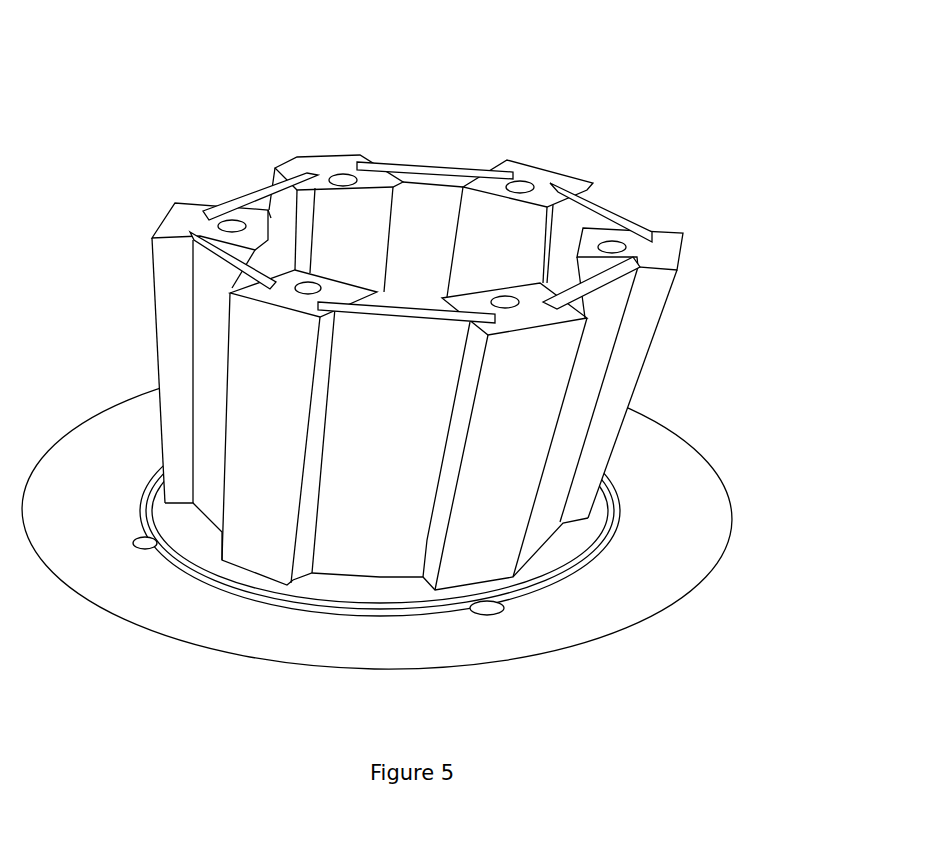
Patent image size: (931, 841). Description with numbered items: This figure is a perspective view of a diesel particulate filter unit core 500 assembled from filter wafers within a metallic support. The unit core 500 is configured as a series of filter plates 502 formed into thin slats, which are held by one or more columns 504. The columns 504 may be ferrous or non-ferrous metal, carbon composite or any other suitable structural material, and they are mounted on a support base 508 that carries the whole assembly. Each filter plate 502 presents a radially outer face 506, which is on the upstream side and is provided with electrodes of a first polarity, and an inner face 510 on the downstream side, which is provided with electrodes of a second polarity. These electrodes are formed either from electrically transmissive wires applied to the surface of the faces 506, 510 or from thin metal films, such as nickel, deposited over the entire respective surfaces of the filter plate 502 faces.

The unit core 500 is at (640, 119).
The filter plate 502 is at (255, 190).
The column 504 is at (670, 240).
The radially outer face 506 is at (396, 464).
The support base 508 is at (582, 542).
The inner face 510 is at (418, 208).